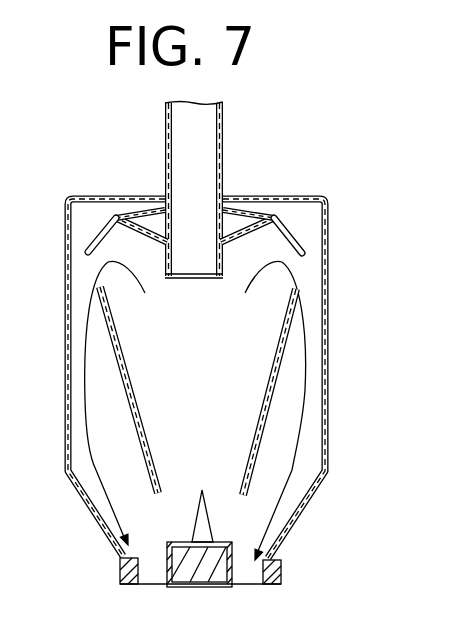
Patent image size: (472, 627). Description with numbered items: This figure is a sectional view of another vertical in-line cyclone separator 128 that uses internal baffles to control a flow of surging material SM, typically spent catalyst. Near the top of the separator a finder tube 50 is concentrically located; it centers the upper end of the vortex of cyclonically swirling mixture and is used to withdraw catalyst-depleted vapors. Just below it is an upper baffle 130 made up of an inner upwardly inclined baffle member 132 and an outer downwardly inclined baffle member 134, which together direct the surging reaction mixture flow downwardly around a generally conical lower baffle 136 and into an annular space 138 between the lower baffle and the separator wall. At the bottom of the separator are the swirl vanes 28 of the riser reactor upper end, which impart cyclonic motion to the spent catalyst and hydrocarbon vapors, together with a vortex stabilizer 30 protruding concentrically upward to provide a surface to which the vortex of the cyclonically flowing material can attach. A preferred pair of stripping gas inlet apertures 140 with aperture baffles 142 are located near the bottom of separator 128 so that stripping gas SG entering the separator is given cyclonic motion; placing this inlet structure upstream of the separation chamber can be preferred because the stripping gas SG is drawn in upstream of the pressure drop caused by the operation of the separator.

The swirl vanes 28 is at (190, 587).
The vortex stabilizer 30 is at (202, 490).
The finder tube 50 is at (205, 140).
The vertical in-line cyclone separator 128 is at (242, 190).
The upper baffle 130 is at (279, 194).
The inner upwardly inclined baffle member 132 is at (142, 222).
The outer downwardly inclined baffle member 134 is at (92, 242).
The generally conical lower baffle 136 is at (150, 440).
The annular space 138 is at (112, 471).
The stripping gas inlet apertures 140 is at (118, 581).
The aperture baffles 142 is at (134, 557).
The surging material SM is at (198, 313).
The stripping gas SG is at (110, 573).